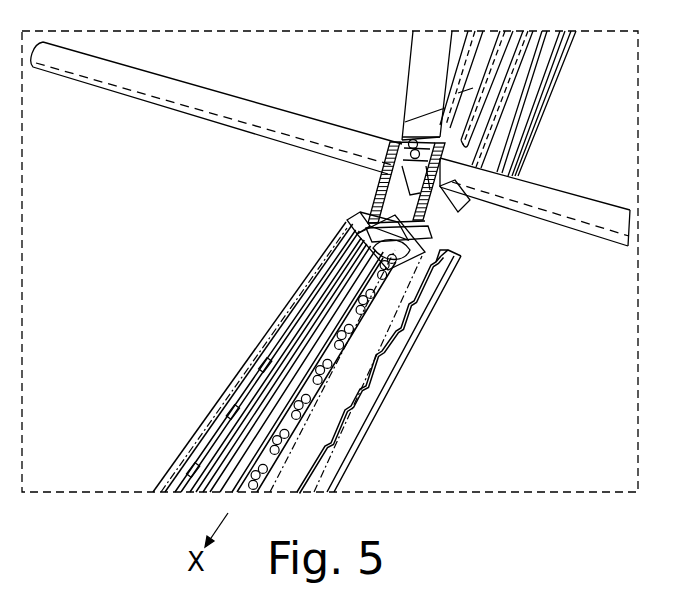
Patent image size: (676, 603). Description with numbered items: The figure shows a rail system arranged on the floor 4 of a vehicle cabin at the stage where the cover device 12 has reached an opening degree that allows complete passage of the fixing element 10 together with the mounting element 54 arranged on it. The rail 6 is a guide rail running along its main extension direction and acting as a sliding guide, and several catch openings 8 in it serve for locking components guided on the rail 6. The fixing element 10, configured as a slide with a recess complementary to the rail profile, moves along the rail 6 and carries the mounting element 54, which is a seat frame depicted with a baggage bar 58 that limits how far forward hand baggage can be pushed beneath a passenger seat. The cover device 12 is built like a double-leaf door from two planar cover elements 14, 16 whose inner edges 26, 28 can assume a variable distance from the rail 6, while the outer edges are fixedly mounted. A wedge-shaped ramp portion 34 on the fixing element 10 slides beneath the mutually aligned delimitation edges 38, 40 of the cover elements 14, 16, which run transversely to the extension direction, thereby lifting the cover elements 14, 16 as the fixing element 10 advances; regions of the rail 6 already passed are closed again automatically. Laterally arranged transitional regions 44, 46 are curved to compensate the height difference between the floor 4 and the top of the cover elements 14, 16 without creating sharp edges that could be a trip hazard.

The floor 4 is at (564, 417).
The rail 6 is at (330, 340).
The catch openings 8 is at (283, 393).
The fixing element 10 is at (457, 210).
The cover device 12 is at (215, 310).
The cover element 14 is at (330, 256).
The cover element 16 is at (361, 342).
The inner edge 26 is at (190, 454).
The inner edge 28 is at (402, 272).
The ramp portion 34 is at (350, 236).
The delimitation edge 38 is at (385, 195).
The delimitation edge 40 is at (448, 244).
The transitional region 44 is at (258, 343).
The transitional region 46 is at (348, 428).
The mounting element 54 is at (414, 122).
The baggage bar 58 is at (532, 192).